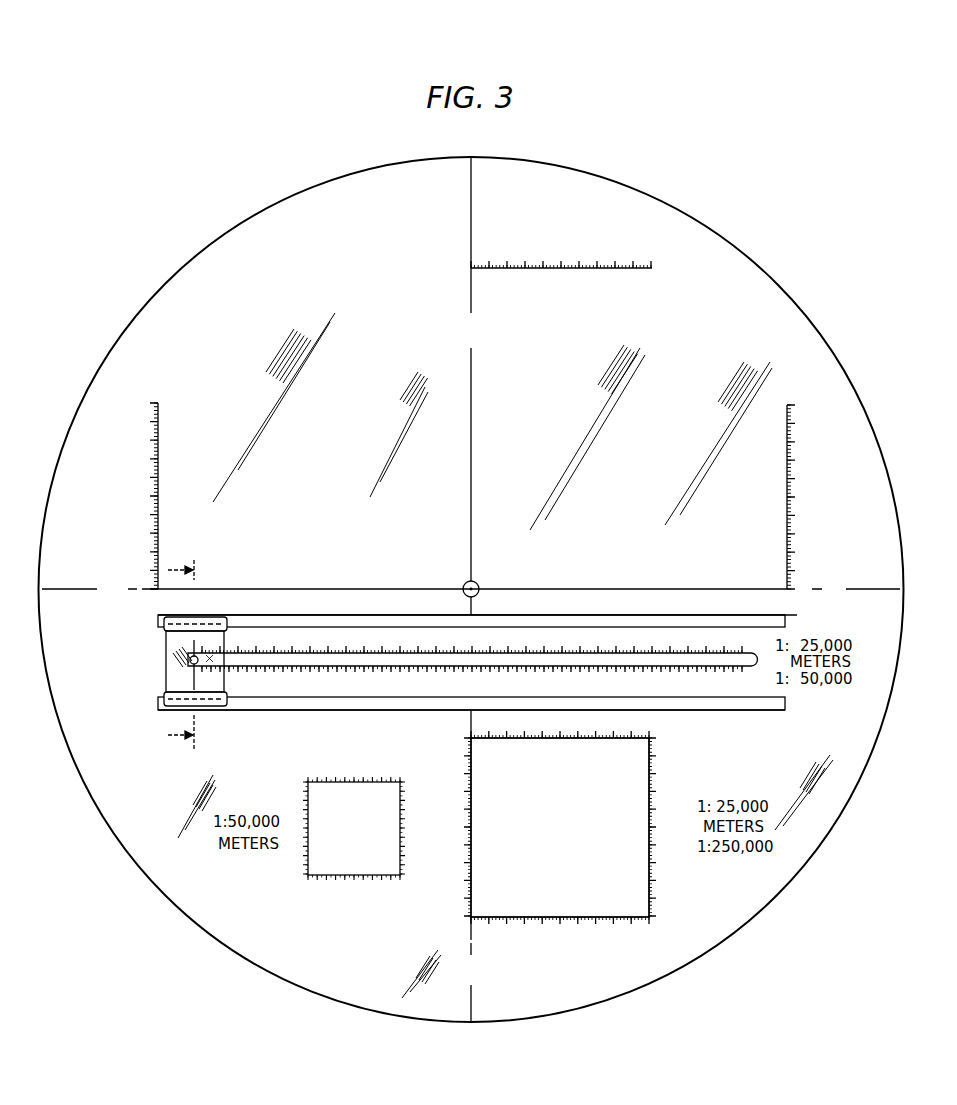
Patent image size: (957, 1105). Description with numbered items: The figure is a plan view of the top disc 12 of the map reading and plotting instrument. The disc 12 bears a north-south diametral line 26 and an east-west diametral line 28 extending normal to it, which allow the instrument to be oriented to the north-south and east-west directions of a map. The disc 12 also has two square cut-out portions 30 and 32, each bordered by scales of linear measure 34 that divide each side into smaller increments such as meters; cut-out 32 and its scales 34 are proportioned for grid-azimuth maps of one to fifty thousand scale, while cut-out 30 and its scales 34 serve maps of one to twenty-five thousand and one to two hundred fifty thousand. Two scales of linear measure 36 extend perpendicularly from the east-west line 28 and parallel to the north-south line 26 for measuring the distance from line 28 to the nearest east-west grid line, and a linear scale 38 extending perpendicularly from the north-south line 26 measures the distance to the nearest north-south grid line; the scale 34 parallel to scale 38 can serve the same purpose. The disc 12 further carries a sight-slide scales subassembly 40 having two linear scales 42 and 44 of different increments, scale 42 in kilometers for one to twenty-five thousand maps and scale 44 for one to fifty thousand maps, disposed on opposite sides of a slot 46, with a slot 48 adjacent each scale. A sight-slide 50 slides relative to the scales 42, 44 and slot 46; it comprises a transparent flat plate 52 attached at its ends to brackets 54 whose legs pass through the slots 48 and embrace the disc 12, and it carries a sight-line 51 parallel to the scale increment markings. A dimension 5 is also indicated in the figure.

The offset dimension 5 is at (188, 655).
The top disc 12 is at (733, 247).
The north-south diametral line 26 is at (473, 437).
The east-west diametral line 28 is at (666, 588).
The cut-out portion 30 is at (652, 786).
The cut-out portion 32 is at (358, 874).
The scales of linear measure 34 is at (293, 806).
The scales of linear measure 36 is at (158, 462).
The linear scale 38 is at (582, 270).
The sight-slide scales subassembly 40 is at (606, 615).
The linear scale 42 is at (518, 650).
The linear scale 44 is at (345, 676).
The slot 46 is at (489, 707).
The slot 48 is at (338, 615).
The sight-slide 50 is at (166, 641).
The sight-line 51 is at (193, 677).
The transparent flat plate 52 is at (172, 660).
The brackets 54 is at (216, 612).